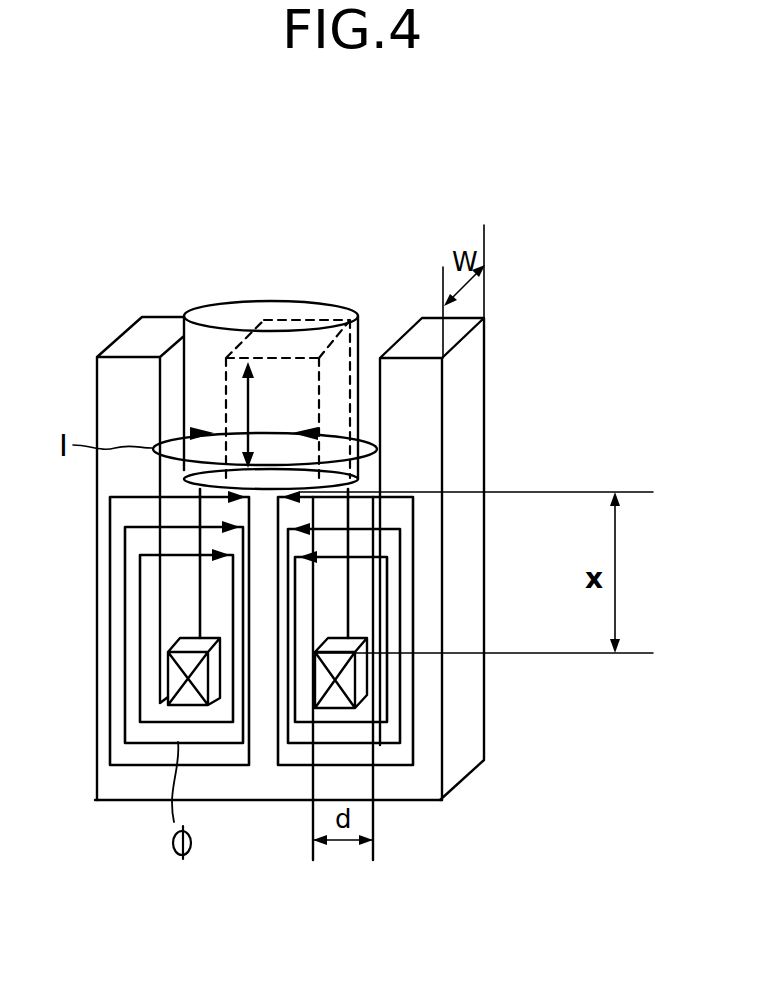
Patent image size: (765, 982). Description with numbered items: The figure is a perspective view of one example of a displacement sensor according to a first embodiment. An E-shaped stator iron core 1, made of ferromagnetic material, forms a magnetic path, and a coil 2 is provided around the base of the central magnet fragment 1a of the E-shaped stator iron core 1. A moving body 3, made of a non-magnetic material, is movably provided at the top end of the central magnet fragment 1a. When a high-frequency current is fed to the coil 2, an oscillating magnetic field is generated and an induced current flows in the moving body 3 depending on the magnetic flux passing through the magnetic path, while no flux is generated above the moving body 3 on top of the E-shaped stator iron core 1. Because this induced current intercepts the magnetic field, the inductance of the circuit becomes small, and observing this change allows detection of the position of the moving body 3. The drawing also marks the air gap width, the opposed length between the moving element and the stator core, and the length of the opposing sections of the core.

The E-shaped stator iron core 1 is at (112, 385).
The central magnet fragment 1a is at (258, 316).
The coil 2 is at (167, 678).
The moving body 3 is at (293, 342).